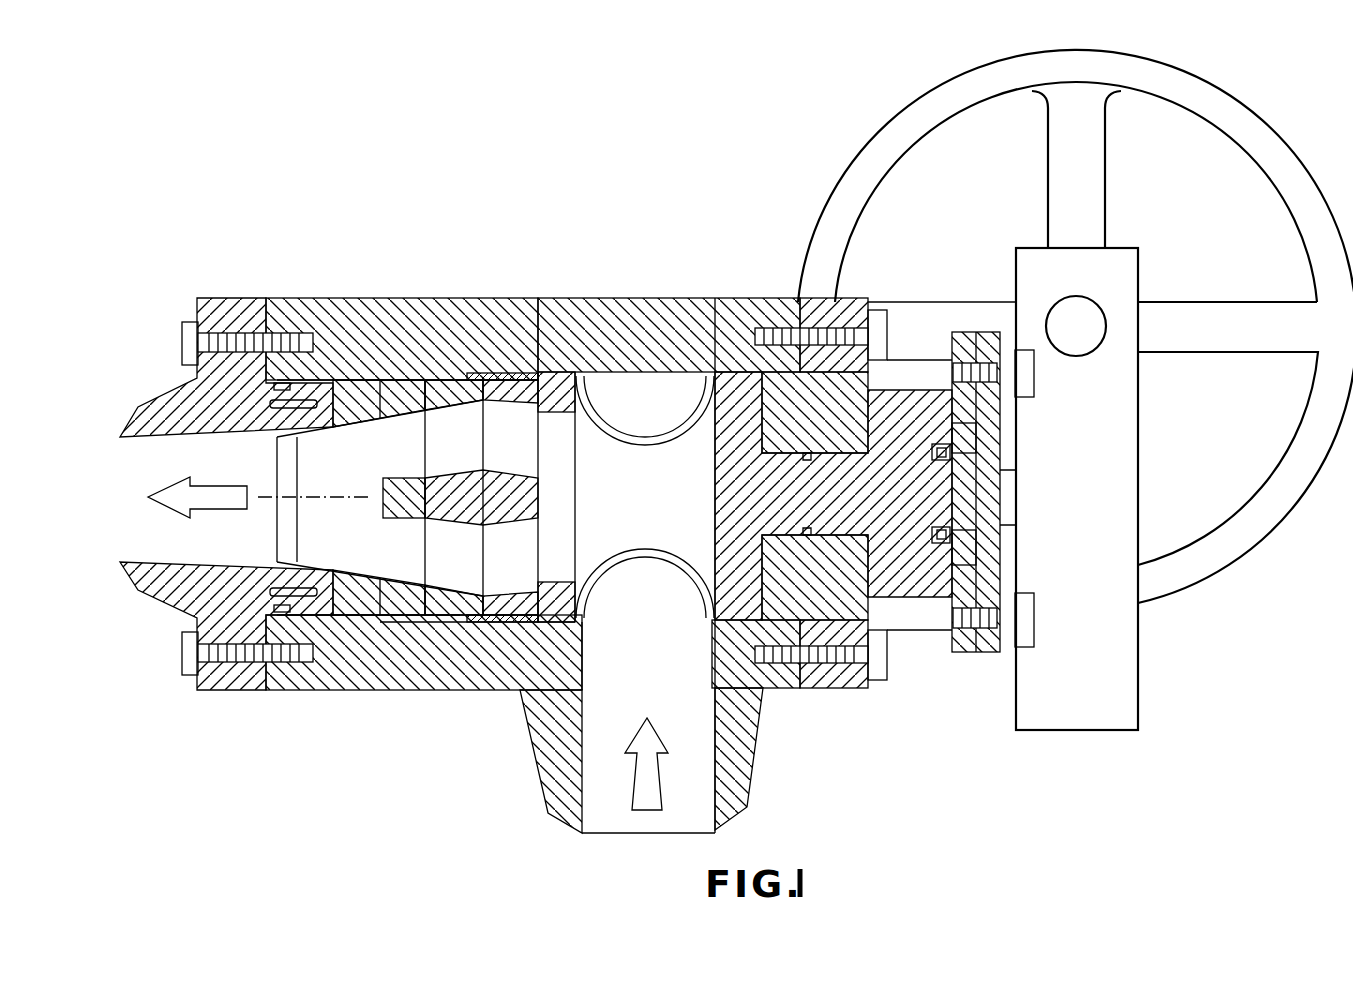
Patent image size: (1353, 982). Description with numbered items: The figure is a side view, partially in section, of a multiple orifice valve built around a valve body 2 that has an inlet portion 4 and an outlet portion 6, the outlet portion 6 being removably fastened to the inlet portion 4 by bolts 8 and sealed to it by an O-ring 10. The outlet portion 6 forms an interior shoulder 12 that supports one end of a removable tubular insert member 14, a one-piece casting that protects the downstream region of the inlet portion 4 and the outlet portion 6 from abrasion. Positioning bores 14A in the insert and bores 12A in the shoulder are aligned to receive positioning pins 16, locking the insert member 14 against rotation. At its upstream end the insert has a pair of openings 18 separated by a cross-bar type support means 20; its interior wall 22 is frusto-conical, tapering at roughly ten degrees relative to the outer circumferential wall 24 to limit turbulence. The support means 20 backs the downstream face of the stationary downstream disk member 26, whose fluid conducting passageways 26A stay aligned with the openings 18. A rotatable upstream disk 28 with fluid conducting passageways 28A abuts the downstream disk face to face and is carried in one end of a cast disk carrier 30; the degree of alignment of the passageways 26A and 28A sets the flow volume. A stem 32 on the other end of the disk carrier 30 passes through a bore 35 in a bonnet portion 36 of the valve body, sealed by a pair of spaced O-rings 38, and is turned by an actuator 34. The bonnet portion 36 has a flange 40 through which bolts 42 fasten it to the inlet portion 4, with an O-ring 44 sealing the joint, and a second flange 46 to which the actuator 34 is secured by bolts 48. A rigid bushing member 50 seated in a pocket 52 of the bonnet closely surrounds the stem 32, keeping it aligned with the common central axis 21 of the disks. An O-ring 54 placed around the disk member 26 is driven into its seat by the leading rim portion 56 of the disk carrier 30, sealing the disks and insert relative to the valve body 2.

The valve body 2 is at (288, 288).
The inlet portion 4 is at (745, 778).
The outlet portion 6 is at (170, 590).
The bolts 8 is at (185, 342).
The O-ring 10 is at (300, 378).
The shoulder 12 is at (372, 372).
The bores 12A is at (287, 392).
The insert member 14 is at (335, 615).
The positioning bores 14A is at (303, 431).
The positioning pins 16 is at (280, 408).
The openings 18 is at (415, 372).
The cross-bar type support means 20 is at (382, 510).
The central axis 21 is at (288, 497).
The interior wall 22 is at (415, 395).
The outer circumferential wall 24 is at (397, 565).
The downstream disk member 26 is at (460, 607).
The fluid conducting passageways 26A is at (437, 453).
The upstream disk 28 is at (518, 603).
The fluid conducting passageways 28A is at (492, 453).
The disk carrier 30 is at (598, 400).
The stem 32 is at (1002, 492).
The actuator 34 is at (1258, 100).
The bore 35 is at (838, 445).
The bonnet portion 36 is at (908, 400).
The O-rings 38 is at (940, 545).
The flange 40 is at (835, 680).
The bolts 42 is at (887, 657).
The O-ring 44 is at (800, 360).
The second flange 46 is at (968, 337).
The bolts 48 is at (1034, 368).
The bushing member 50 is at (1000, 440).
The pocket 52 is at (1000, 582).
The O-ring 54 is at (483, 372).
The leading rim portion 56 is at (516, 372).